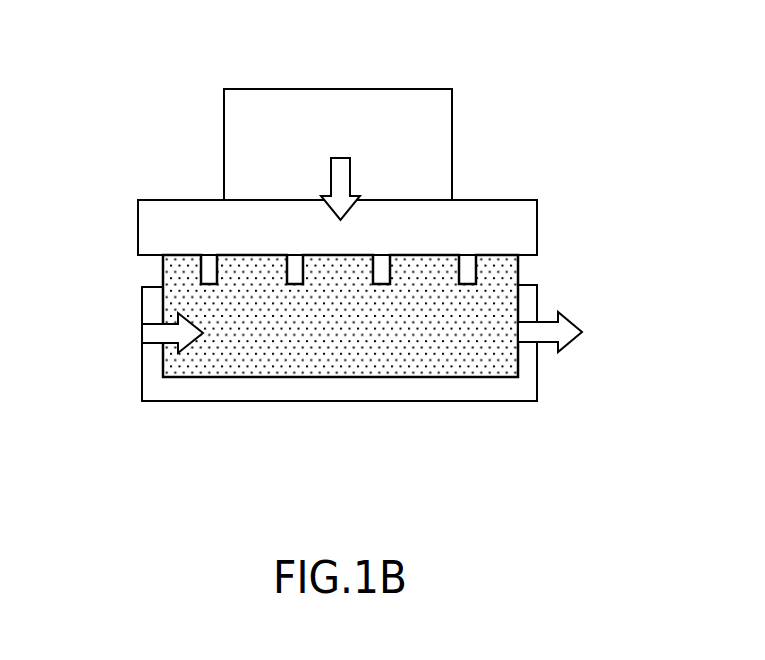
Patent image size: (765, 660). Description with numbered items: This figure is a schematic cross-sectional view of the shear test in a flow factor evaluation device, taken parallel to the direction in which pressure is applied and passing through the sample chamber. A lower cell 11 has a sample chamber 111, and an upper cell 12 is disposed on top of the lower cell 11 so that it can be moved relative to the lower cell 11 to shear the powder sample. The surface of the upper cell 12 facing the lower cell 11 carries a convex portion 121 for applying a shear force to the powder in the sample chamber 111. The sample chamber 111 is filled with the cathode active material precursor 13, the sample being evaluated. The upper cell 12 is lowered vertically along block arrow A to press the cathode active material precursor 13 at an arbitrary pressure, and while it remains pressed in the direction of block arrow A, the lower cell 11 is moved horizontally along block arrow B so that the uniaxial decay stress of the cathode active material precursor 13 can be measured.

The lower cell 11 is at (427, 385).
The sample chamber 111 is at (153, 278).
The upper cell 12 is at (500, 213).
The convex portion 121 is at (466, 263).
The cathode active material precursor 13 is at (198, 363).
The block arrow A is at (340, 166).
The block arrow B is at (150, 333).